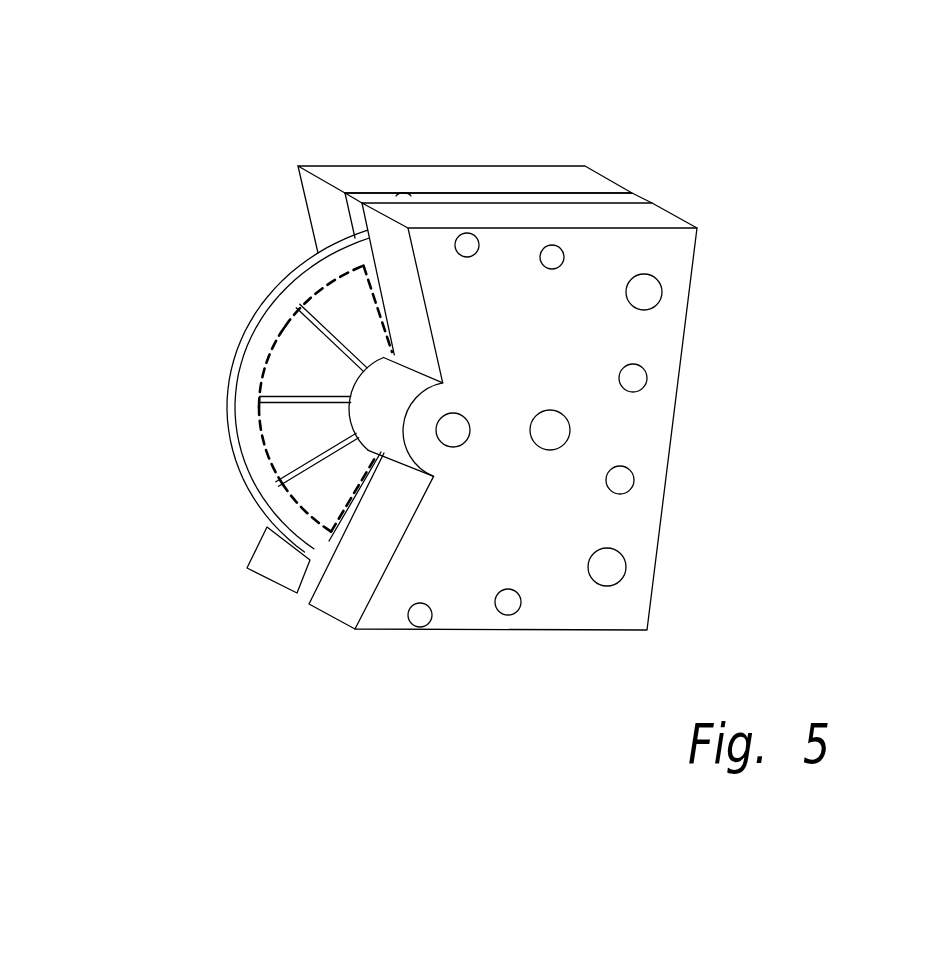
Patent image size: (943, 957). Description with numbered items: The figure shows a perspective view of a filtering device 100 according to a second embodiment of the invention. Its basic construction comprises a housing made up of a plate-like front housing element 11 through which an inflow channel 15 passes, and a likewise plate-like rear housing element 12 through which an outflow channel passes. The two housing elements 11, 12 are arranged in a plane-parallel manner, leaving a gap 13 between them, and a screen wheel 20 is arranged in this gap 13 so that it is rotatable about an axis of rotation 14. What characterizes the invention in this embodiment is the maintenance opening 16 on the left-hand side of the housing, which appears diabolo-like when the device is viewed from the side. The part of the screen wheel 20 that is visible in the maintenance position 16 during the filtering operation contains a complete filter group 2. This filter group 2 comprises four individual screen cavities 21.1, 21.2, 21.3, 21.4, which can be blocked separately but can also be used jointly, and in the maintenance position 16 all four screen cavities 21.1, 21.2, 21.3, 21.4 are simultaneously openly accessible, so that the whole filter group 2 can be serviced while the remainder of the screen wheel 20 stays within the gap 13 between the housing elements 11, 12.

The filtering device 100 is at (192, 103).
The rear housing element 12 is at (315, 166).
The front housing element 11 is at (385, 193).
The gap 13 is at (633, 193).
The axis of rotation 14 is at (457, 430).
The inflow channel 15 is at (547, 429).
The maintenance opening 16 is at (207, 425).
The screen wheel 20 is at (245, 347).
The screen cavity 21.1 is at (315, 497).
The screen cavity 21.2 is at (277, 442).
The screen cavity 21.3 is at (287, 367).
The screen cavity 21.4 is at (345, 308).
The filter group 2 is at (270, 483).